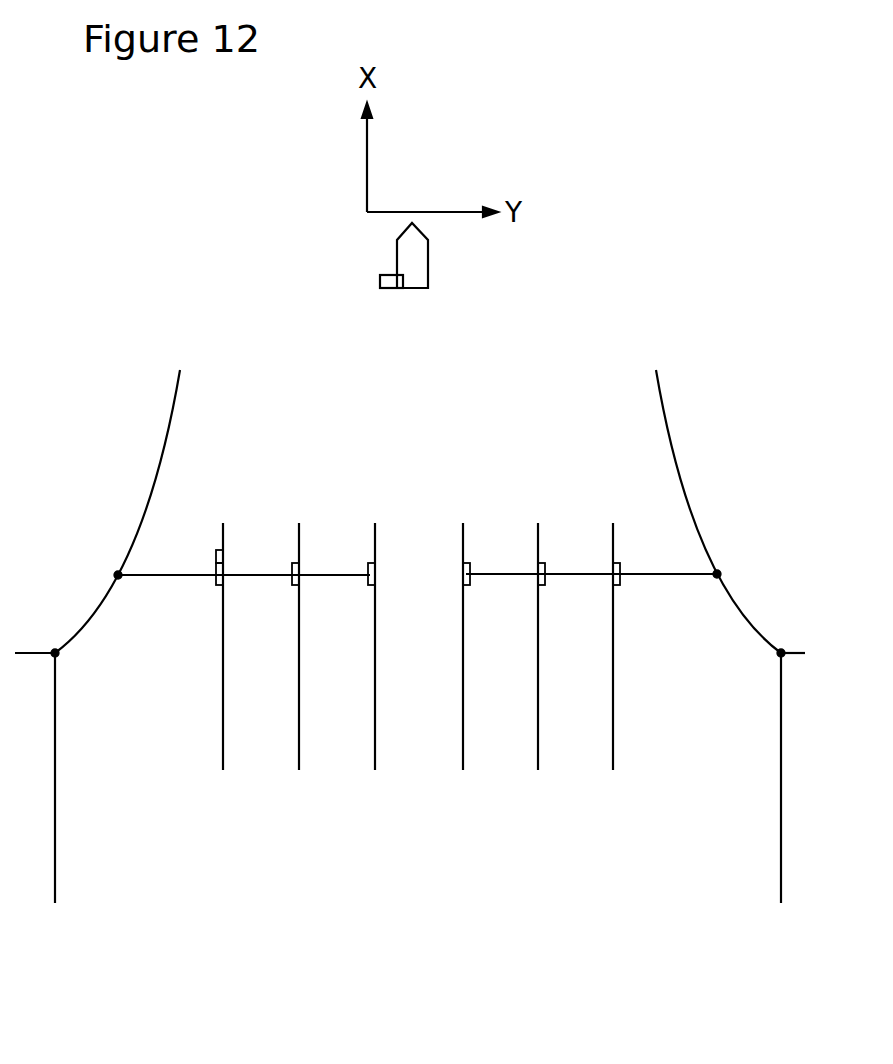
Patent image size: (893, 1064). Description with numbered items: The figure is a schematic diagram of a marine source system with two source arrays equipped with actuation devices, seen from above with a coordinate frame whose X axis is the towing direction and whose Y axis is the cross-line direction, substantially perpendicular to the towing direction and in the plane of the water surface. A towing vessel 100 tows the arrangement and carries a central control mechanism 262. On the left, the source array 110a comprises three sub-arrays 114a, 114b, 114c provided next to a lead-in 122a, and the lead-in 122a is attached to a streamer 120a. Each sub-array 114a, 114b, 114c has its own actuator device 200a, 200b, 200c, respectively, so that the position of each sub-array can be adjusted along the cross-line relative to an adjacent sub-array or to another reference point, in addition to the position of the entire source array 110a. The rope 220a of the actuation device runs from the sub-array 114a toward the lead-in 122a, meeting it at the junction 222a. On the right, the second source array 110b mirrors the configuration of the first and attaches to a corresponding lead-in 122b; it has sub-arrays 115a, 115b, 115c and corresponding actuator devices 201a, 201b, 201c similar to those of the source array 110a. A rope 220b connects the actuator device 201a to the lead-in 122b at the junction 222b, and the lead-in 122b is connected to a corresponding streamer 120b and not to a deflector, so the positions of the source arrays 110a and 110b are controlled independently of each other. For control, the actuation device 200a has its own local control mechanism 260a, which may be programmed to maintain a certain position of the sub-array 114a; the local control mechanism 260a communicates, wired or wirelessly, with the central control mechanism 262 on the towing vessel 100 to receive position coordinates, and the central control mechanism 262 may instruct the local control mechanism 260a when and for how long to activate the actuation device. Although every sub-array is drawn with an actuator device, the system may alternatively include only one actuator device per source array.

The towing vessel 100 is at (417, 258).
The central control mechanism 262 is at (385, 280).
The source array 110a is at (317, 447).
The second source array 110b is at (567, 447).
The lead-in 122a is at (153, 488).
The lead-in 122b is at (682, 487).
The streamer 120a is at (55, 837).
The streamer 120b is at (781, 837).
The first junction point 222a is at (118, 575).
The second junction point 222b is at (717, 573).
The actuation device rope 220a is at (158, 577).
The rope 220b is at (679, 577).
The sub-array 114a is at (223, 700).
The sub-array 114b is at (299, 699).
The sub-array 114c is at (375, 699).
The sub-array 115a is at (613, 699).
The sub-array 115b is at (538, 699).
The sub-array 115c is at (463, 699).
The local control mechanism 260a is at (215, 557).
The actuator device 200a is at (213, 578).
The actuator device 200b is at (292, 577).
The actuator device 200c is at (365, 577).
The actuator device 201a is at (617, 562).
The actuator device 201b is at (542, 562).
The actuator device 201c is at (466, 562).